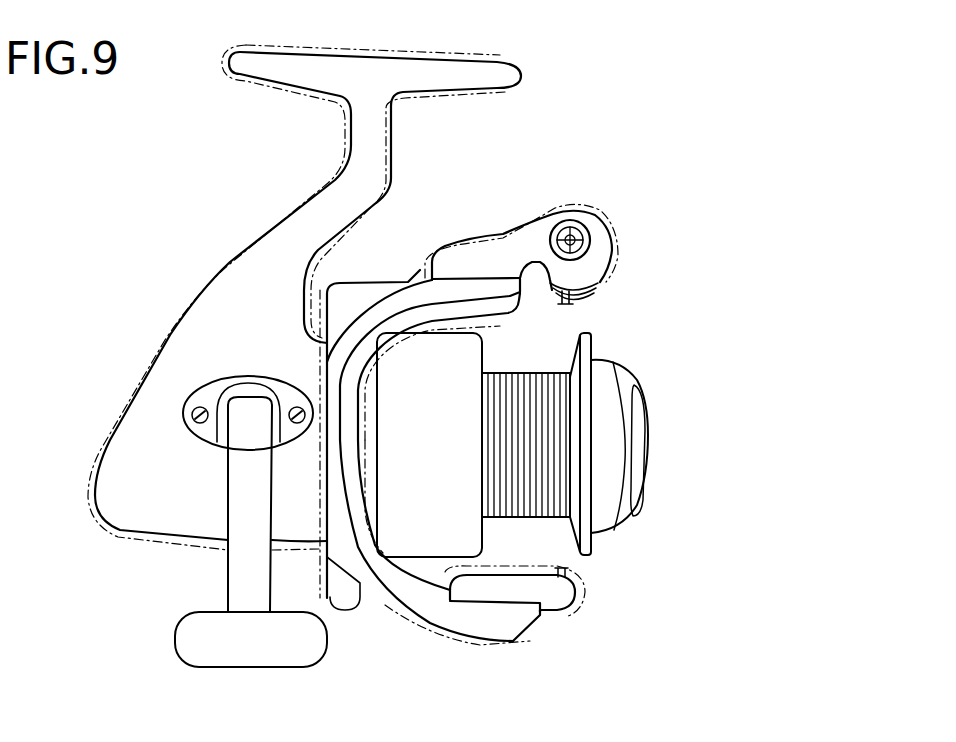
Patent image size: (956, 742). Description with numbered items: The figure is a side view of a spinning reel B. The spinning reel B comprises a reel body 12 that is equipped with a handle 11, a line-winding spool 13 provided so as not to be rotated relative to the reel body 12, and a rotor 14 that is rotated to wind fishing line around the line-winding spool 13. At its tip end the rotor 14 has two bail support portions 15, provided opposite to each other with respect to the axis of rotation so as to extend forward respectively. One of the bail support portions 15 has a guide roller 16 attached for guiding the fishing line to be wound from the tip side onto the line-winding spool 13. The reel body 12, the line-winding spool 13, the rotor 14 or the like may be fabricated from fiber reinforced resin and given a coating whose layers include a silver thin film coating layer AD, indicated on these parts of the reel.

The spinning reel B is at (485, 188).
The handle 11 is at (243, 568).
The reel body 12 is at (133, 448).
The line-winding spool 13 is at (543, 508).
The rotor 14 is at (326, 458).
The bail support portions 15 is at (592, 240).
The guide roller 16 is at (590, 287).
The silver thin film coating layer AD is at (165, 348).